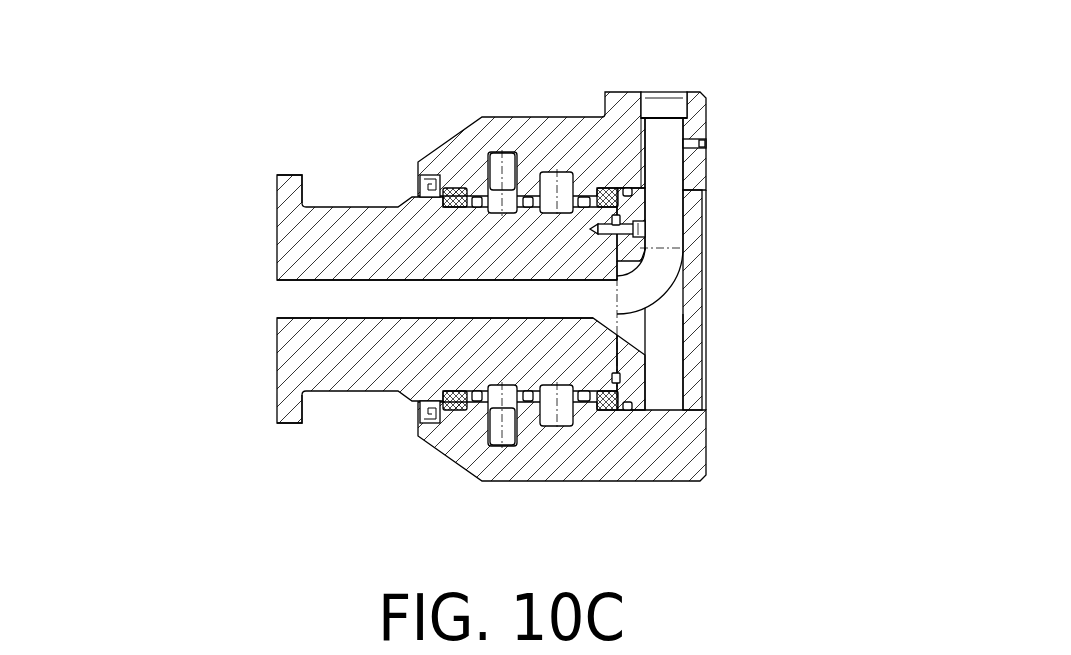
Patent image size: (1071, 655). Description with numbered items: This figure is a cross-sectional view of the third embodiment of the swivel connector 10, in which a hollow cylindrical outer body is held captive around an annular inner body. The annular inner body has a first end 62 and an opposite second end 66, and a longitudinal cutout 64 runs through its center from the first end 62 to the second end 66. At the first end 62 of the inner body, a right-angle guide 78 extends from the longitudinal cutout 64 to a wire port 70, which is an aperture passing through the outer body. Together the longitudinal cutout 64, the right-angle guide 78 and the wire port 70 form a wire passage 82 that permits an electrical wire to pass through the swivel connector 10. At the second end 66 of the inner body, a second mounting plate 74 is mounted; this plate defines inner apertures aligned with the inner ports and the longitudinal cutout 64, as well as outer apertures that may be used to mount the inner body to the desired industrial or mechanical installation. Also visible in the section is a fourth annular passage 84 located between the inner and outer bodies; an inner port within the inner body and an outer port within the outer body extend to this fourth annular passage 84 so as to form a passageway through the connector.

The swivel connector 10 is at (780, 107).
The first end 62 is at (613, 248).
The longitudinal cutout 64 is at (382, 302).
The second end 66 is at (302, 250).
The wire port 70 is at (663, 108).
The second mounting plate 74 is at (288, 410).
The right-angle guide 78 is at (650, 285).
The wire passage 82 is at (560, 302).
The fourth annular passage 84 is at (560, 407).